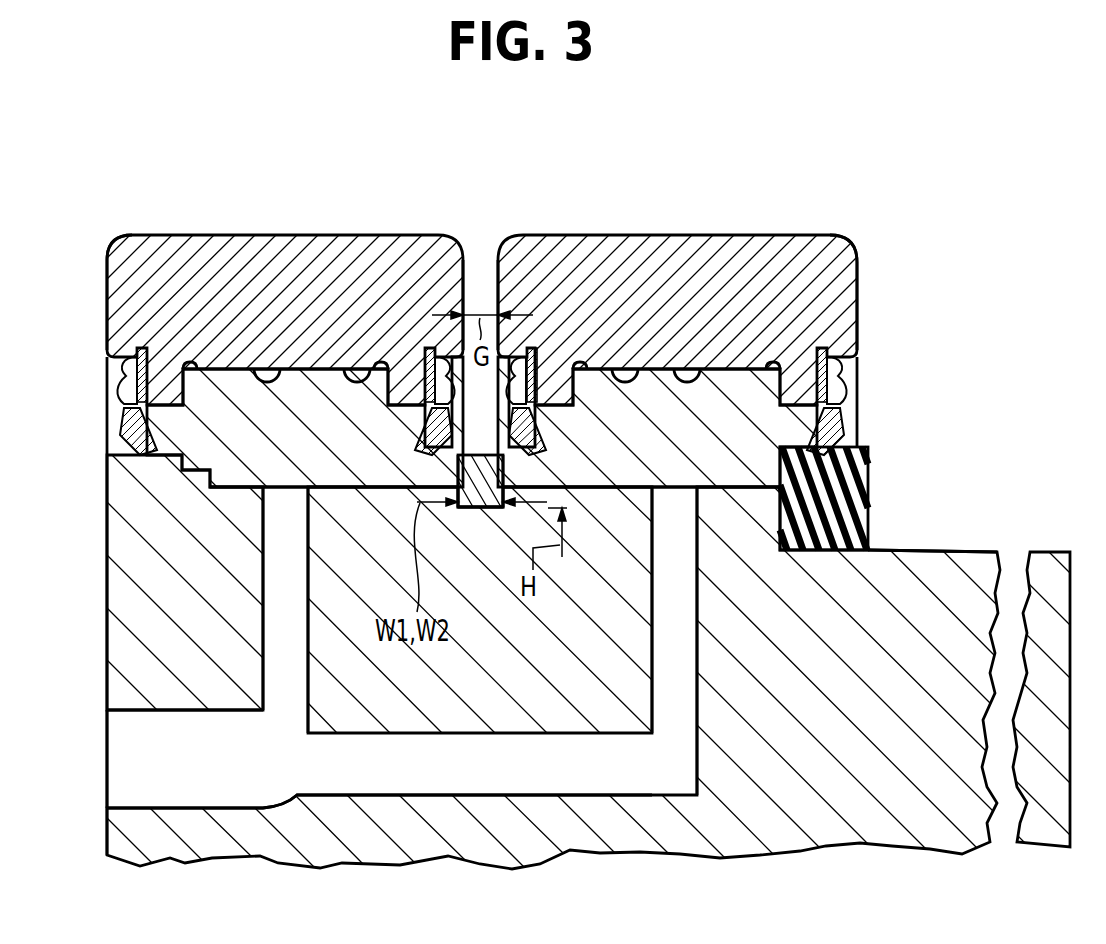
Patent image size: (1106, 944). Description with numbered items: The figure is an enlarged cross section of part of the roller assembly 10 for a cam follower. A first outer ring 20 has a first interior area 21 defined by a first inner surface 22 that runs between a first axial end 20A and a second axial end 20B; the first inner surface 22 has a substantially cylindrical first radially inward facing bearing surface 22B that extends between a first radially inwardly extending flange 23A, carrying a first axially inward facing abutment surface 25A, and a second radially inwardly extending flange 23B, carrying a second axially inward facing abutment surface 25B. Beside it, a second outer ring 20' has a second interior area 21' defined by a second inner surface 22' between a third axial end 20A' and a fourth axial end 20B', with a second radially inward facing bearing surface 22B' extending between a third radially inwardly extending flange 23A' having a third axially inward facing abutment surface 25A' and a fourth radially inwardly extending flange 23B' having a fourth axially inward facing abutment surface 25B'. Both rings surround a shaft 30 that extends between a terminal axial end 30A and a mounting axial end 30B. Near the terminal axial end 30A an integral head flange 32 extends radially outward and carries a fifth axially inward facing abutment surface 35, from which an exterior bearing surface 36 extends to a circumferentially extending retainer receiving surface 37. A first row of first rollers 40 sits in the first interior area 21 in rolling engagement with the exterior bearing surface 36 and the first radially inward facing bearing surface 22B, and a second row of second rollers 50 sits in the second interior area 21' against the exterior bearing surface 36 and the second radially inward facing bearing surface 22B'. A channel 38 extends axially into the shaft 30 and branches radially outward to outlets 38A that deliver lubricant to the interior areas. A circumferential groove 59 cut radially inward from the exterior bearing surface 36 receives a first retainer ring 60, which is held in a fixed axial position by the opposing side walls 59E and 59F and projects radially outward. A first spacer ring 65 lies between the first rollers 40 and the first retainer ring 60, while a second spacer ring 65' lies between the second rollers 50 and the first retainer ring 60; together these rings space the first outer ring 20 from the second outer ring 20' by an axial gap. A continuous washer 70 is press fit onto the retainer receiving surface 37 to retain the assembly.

The roller assembly 10 is at (928, 192).
The first outer ring 20 is at (285, 264).
The second outer ring 20' is at (677, 285).
The first axial end 20A is at (61, 305).
The third axial end 20A' is at (892, 294).
The second axial end 20B is at (440, 261).
The fourth axial end 20B' is at (514, 261).
The first interior area 21 is at (96, 267).
The second interior area 21' is at (839, 233).
The first inner surface 22 is at (260, 424).
The second inner surface 22' is at (677, 422).
The first radially inward facing bearing surface 22B is at (285, 286).
The second radially inward facing bearing surface 22B' is at (676, 242).
The first radially inwardly extending flange 23A is at (131, 292).
The third radially inwardly extending flange 23A' is at (807, 297).
The second radially inwardly extending flange 23B is at (415, 266).
The fourth radially inwardly extending flange 23B' is at (559, 294).
The first axially inward facing abutment surface 25A is at (180, 298).
The third axially inward facing abutment surface 25A' is at (782, 273).
The second axially inward facing abutment surface 25B is at (370, 257).
The fourth axially inward facing abutment surface 25B' is at (592, 268).
The shaft 30 is at (945, 552).
The terminal axial end 30A is at (107, 645).
The mounting axial end 30B is at (1072, 593).
The head flange 32 is at (163, 478).
The fifth axially inward facing abutment surface 35 is at (233, 466).
The exterior bearing surface 36 is at (343, 487).
The retainer receiving surface 37 is at (840, 552).
The channel 38 is at (198, 792).
The outlet 38A is at (286, 617).
The first rollers 40 is at (234, 470).
The second rollers 50 is at (627, 460).
The circumferential groove 59 is at (492, 508).
The side wall of groove 59E is at (455, 473).
The side wall of groove 59F is at (505, 478).
The first retainer ring 60 is at (460, 507).
The first spacer ring 65 is at (396, 431).
The second spacer ring 65' is at (573, 431).
The washer 70 is at (868, 460).